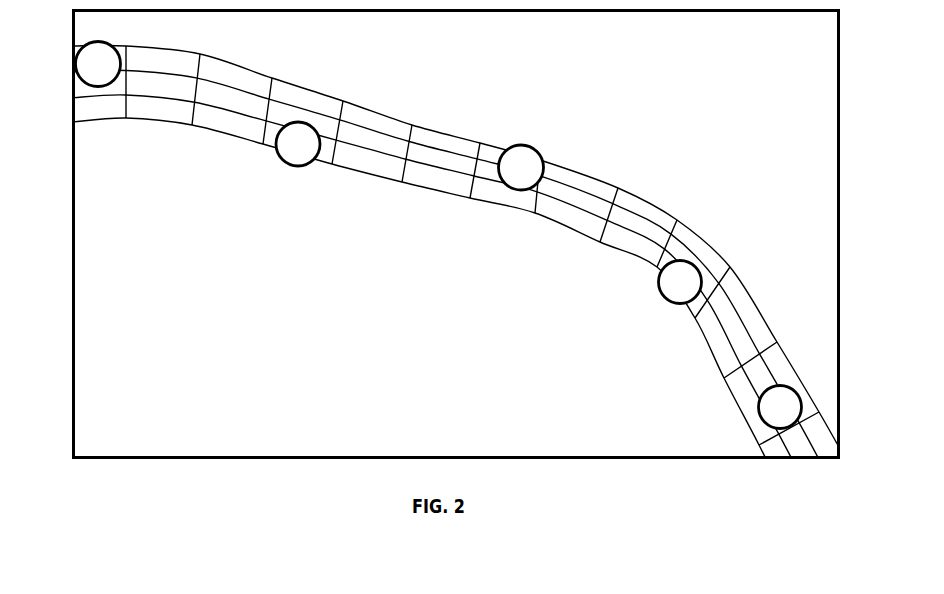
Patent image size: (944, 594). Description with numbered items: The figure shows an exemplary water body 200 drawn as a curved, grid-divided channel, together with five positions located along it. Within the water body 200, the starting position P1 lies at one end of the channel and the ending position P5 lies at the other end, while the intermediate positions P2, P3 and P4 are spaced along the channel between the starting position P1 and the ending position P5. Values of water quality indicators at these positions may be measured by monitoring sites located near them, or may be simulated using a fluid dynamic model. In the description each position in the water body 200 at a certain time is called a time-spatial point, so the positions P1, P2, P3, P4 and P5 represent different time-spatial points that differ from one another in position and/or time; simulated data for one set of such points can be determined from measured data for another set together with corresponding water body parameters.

The water body 200 is at (380, 188).
The starting position P1 is at (98, 64).
The intermediate position P2 is at (298, 144).
The intermediate position P3 is at (521, 167).
The intermediate position P4 is at (680, 282).
The ending position P5 is at (780, 407).